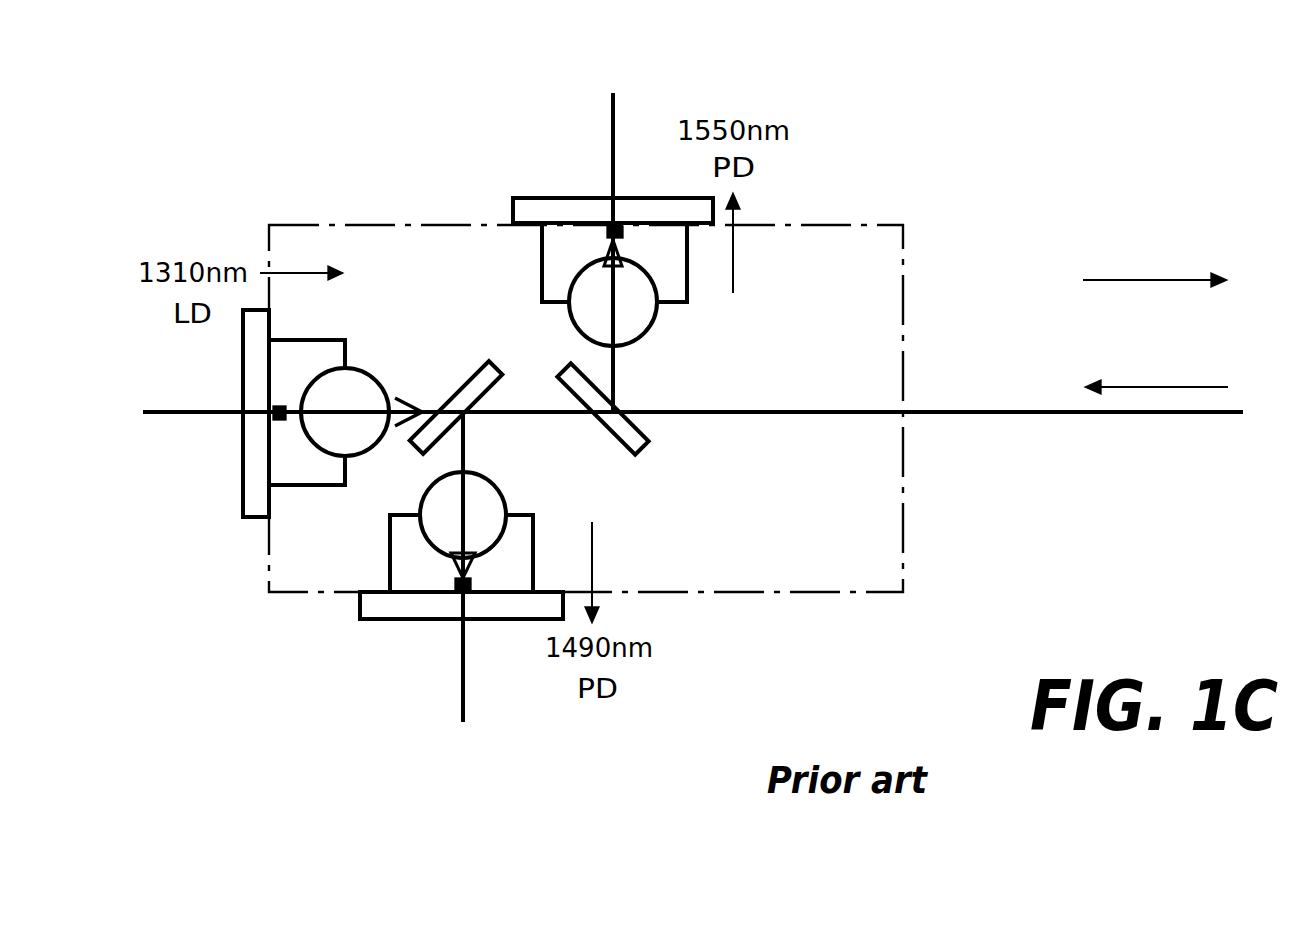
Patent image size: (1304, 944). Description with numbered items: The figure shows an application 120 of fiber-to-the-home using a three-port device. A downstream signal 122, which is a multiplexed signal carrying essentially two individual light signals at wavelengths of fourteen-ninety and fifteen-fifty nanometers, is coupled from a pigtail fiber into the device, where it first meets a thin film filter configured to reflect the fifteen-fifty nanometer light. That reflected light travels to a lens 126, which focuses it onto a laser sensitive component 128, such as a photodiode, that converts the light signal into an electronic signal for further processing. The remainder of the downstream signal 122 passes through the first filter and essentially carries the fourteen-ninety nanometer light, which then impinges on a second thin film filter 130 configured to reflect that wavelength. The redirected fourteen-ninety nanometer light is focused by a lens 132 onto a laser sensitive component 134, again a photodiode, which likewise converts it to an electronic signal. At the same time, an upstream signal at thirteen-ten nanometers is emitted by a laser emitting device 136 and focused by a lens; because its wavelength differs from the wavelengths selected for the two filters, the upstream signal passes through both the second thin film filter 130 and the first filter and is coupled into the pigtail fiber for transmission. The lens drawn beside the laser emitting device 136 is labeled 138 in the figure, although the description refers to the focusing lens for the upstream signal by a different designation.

The application of fiber-to-the-home using a three-port device 120 is at (742, 330).
The downstream signal 122 is at (713, 325).
The lens 126 is at (635, 305).
The laser sensitive component 128 is at (604, 232).
The second thin film filter 130 is at (476, 389).
The lens 132 is at (478, 508).
The laser sensitive component 134 is at (428, 652).
The laser emitting device 136 is at (277, 422).
The lens for laser diode 138 is at (352, 398).